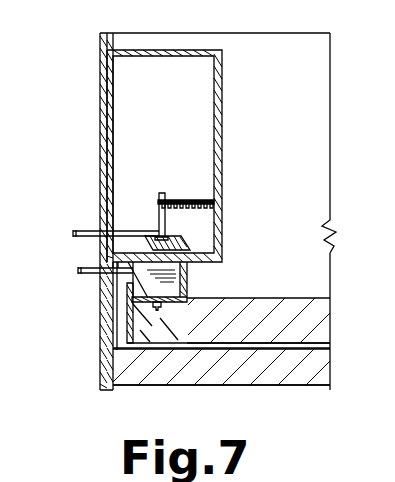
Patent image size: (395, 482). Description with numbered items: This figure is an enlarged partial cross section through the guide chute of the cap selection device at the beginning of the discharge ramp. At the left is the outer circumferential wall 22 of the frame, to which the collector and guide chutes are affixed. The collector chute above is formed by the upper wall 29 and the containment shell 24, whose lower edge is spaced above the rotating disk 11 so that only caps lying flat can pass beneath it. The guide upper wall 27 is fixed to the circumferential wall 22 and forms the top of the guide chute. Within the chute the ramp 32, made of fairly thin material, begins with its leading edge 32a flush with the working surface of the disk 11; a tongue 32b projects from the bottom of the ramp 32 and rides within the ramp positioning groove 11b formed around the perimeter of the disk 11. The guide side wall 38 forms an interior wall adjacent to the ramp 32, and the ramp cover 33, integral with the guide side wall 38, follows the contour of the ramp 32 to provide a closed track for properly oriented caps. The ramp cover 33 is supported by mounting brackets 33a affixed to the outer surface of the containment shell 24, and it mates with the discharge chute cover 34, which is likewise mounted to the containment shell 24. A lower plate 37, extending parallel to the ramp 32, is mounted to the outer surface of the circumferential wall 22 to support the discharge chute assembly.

The outer circumferential wall 22 is at (100, 44).
The upper wall 29 is at (165, 50).
The containment shell 24 is at (222, 73).
The mounting brackets 33a is at (190, 200).
The ramp cover 33 is at (183, 243).
The discharge chute cover 34 is at (73, 233).
The lower plate 37 is at (78, 272).
The guide upper wall 27 is at (130, 257).
The ramp 32 is at (120, 287).
The guide side wall 38 is at (187, 279).
The rotating disk 11 is at (318, 308).
The leading edge 32a is at (165, 306).
The tongue 32b is at (165, 306).
The ramp positioning groove 11b is at (163, 310).